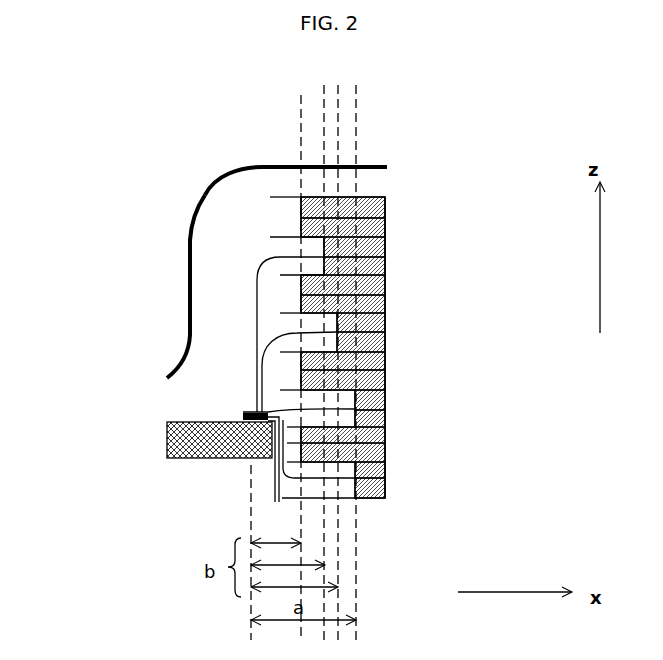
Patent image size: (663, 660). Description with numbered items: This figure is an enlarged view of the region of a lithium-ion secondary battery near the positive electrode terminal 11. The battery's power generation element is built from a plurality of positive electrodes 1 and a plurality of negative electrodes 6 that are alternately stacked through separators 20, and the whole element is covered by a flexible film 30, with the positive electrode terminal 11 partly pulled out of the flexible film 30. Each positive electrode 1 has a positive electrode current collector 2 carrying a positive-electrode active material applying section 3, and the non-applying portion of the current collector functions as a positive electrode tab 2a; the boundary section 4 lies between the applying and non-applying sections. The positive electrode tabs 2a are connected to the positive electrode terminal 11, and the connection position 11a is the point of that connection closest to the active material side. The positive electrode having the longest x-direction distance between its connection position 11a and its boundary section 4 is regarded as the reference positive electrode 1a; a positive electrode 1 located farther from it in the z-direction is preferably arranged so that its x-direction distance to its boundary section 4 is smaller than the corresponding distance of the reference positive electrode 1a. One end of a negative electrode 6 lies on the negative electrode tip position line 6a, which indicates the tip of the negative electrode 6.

The positive electrode 1 is at (387, 235).
The reference positive electrode 1a is at (387, 415).
The positive electrode current collector 2 is at (387, 243).
The positive electrode tab 2a is at (248, 322).
The positive-electrode active material applying section 3 is at (386, 268).
The boundary section 4 is at (387, 193).
The negative electrode 6 is at (387, 205).
The negative electrode tip position line 6a is at (300, 105).
The positive electrode terminal 11 is at (167, 447).
The connection position 11a is at (180, 458).
The separator 20 is at (243, 177).
The flexible film 30 is at (190, 252).